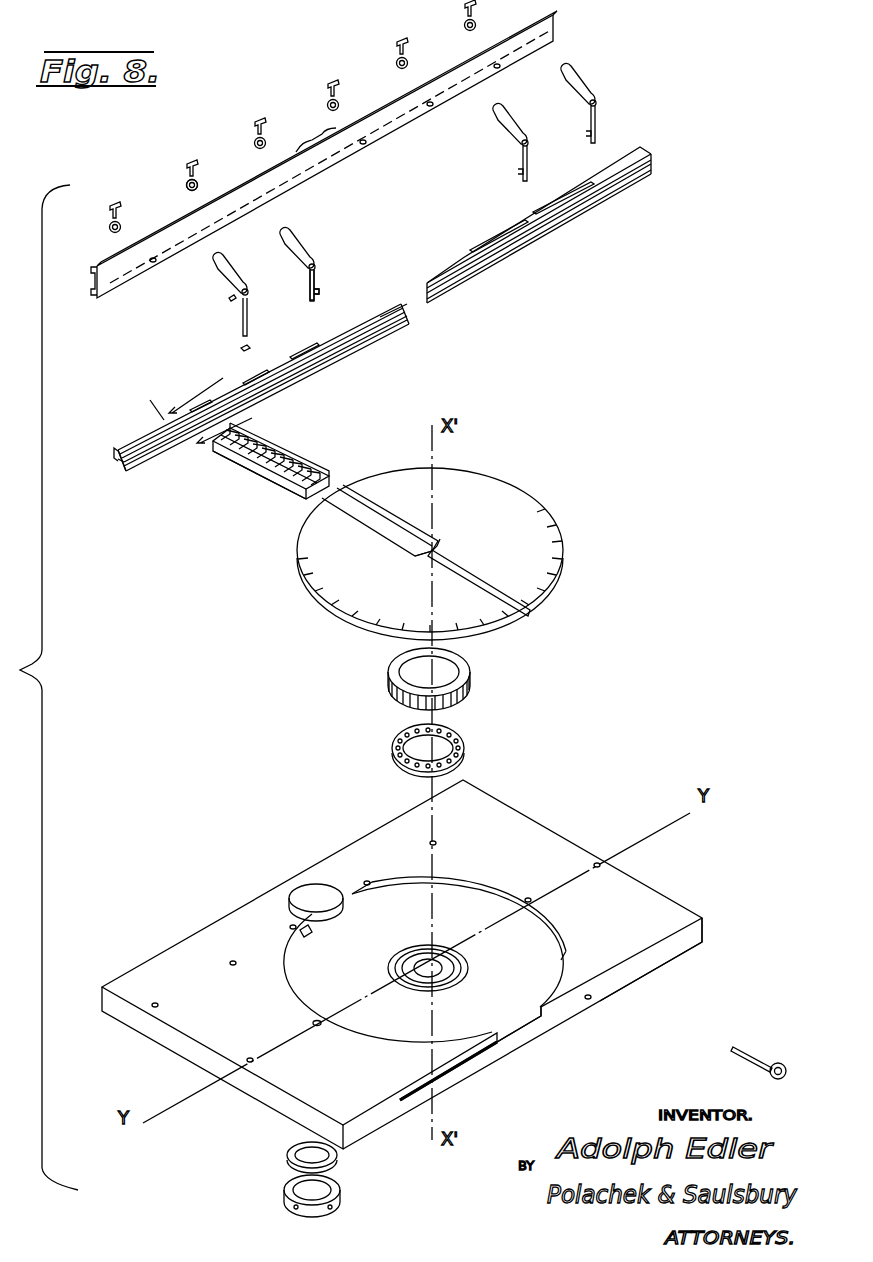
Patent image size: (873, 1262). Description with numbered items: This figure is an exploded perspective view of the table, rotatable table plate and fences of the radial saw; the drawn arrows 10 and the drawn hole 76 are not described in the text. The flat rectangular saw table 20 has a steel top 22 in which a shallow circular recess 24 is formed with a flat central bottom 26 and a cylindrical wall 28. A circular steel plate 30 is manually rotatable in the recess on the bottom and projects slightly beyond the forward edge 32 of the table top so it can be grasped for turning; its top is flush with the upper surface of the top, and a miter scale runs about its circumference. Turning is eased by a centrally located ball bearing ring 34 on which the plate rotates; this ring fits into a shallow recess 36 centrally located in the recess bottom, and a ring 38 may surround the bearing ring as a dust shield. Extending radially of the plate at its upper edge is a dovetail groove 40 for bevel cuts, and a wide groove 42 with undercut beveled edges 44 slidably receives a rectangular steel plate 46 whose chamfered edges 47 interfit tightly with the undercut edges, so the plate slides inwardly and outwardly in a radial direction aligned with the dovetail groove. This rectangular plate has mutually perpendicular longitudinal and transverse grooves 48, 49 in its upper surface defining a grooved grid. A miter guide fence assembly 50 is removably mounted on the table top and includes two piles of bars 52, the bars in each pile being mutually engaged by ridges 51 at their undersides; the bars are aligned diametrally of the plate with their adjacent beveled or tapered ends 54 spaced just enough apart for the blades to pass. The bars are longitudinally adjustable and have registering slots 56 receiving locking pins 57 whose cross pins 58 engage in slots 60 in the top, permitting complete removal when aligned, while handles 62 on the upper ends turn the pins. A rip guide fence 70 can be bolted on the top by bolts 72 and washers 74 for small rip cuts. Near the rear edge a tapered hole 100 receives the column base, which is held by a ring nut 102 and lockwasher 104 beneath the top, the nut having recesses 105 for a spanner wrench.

The direction arrows 10 is at (210, 404).
The saw table 20 is at (732, 1048).
The steel top 22 is at (610, 960).
The shallow circular recess 24 is at (533, 1018).
The flat central bottom 26 is at (483, 1022).
The cylindrical wall 28 is at (466, 888).
The circular steel plate 30 is at (365, 602).
The forward edge 32 is at (684, 944).
The ball bearing ring 34 is at (464, 758).
The shallow recess 36 is at (438, 984).
The ring 38 is at (468, 680).
The dovetail groove 40 is at (500, 600).
The wide groove 42 is at (376, 522).
The undercut beveled edges 44 is at (406, 541).
The rectangular steel plate 46 is at (230, 460).
The chamfered edges 47 is at (245, 470).
The longitudinal grooves 48 is at (272, 440).
The transverse grooves 49 is at (280, 455).
The miter guide fence assembly 50 is at (436, 318).
The ridges 51 is at (126, 464).
The bars 52 is at (328, 358).
The beveled or tapered ends 54 is at (351, 322).
The registering slots 56 is at (296, 357).
The locking pins 57 is at (318, 278).
The cross pins 58 is at (312, 295).
The slots 60 is at (312, 1020).
The handles 62 is at (292, 239).
The rip guide fence 70 is at (156, 262).
The bolts 72 is at (182, 180).
The washers 74 is at (184, 190).
The plate top surface hole 76 is at (230, 966).
The tapered hole 100 is at (306, 896).
The ring nut 102 is at (288, 1188).
The lockwasher 104 is at (288, 1148).
The recesses 105 is at (297, 1208).